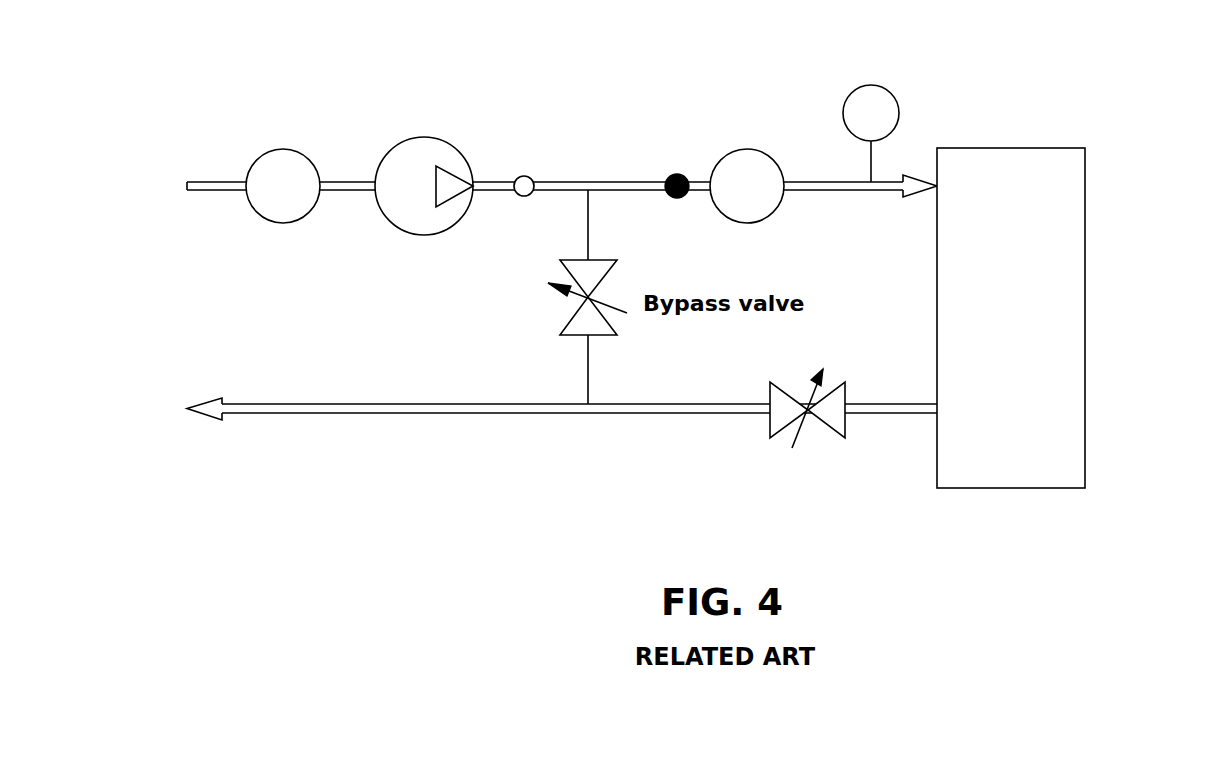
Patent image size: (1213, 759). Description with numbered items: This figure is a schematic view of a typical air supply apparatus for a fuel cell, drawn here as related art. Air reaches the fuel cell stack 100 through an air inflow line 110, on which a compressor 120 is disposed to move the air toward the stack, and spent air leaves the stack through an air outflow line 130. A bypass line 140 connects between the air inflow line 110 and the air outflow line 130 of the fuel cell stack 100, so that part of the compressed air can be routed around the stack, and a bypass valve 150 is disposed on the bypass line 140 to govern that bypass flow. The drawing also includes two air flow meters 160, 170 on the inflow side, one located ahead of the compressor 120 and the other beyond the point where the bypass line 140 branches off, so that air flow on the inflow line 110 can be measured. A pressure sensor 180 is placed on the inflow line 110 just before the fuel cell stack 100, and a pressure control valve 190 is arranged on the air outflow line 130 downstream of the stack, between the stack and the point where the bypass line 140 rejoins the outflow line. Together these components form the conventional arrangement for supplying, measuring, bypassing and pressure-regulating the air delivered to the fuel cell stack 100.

The fuel cell stack 100 is at (1085, 230).
The air inflow line 110 is at (556, 183).
The compressor 120 is at (393, 227).
The air outflow line 130 is at (608, 409).
The bypass line 140 is at (587, 370).
The bypass valve 150 is at (565, 323).
The air flow meter 160 is at (277, 223).
The air flow meter 170 is at (780, 213).
The pressure sensor 180 is at (898, 101).
The pressure control valve 190 is at (768, 425).